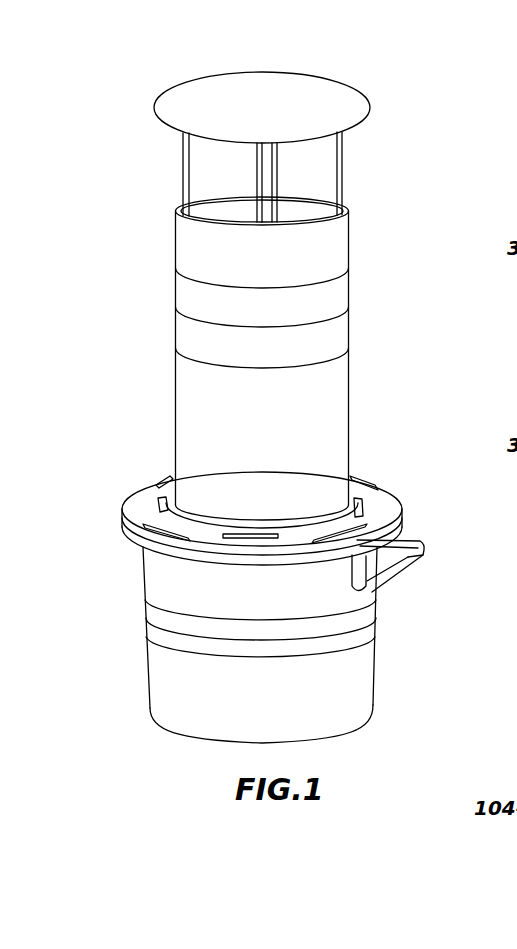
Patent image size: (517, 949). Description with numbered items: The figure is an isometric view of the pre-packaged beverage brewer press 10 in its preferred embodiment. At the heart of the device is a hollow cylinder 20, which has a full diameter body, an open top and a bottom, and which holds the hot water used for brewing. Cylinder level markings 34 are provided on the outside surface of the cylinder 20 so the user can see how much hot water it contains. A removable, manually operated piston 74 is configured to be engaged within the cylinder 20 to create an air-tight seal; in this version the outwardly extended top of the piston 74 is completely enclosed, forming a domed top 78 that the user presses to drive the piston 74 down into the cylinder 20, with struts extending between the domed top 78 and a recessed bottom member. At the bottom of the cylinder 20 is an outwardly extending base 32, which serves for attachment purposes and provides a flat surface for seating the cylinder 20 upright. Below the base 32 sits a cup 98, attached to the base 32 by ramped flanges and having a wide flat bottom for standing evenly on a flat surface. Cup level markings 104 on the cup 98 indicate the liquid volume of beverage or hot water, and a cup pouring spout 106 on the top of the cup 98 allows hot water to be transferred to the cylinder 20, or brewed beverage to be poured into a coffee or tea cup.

The pre-packaged beverage brewer press 10 is at (172, 66).
The domed top 78 is at (323, 78).
The piston 74 is at (180, 191).
The cylinder level markings 34 is at (303, 282).
The hollow cylinder 20 is at (350, 427).
The base 32 is at (133, 498).
The cup pouring spout 106 is at (408, 562).
The cup level markings 104 is at (358, 645).
The cup 98 is at (170, 730).